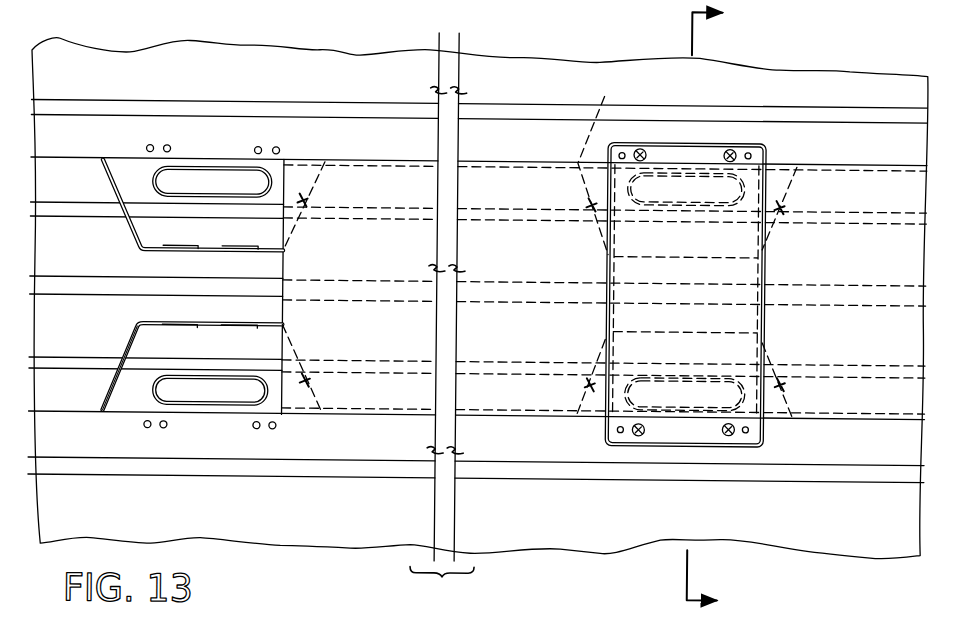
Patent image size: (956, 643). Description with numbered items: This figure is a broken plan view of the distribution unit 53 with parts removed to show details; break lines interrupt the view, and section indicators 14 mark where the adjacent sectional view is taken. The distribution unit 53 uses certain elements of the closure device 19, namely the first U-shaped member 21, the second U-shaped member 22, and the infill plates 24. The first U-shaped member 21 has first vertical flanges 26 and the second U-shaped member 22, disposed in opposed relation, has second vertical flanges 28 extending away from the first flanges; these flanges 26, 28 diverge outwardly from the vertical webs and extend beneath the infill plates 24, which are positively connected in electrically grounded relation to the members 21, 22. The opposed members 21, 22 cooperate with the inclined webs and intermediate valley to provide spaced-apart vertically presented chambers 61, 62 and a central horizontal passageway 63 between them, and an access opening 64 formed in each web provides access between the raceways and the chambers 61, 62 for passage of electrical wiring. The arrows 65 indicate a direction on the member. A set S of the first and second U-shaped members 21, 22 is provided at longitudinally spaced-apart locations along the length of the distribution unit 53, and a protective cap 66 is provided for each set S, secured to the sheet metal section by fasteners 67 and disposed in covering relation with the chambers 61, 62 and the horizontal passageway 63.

The closure device 19 is at (508, 153).
The infill plates 24 is at (402, 345).
The distribution unit 53 is at (501, 46).
The vertically presented chamber 62 is at (131, 174).
The second U-shaped member 22 is at (285, 254).
The vertically presented chamber 61 is at (133, 390).
The access opening 64 is at (199, 396).
The central horizontal passageway 63 is at (150, 312).
The bracket leg 65 is at (101, 344).
The first U-shaped member 21 is at (286, 320).
The second vertical flanges 28 is at (606, 99).
The first vertical flanges 26 is at (593, 411).
The protective cap 66 is at (679, 149).
The fasteners 67 is at (731, 156).
The section line 14 is at (732, 309).
The set of U-shaped members S is at (122, 240).